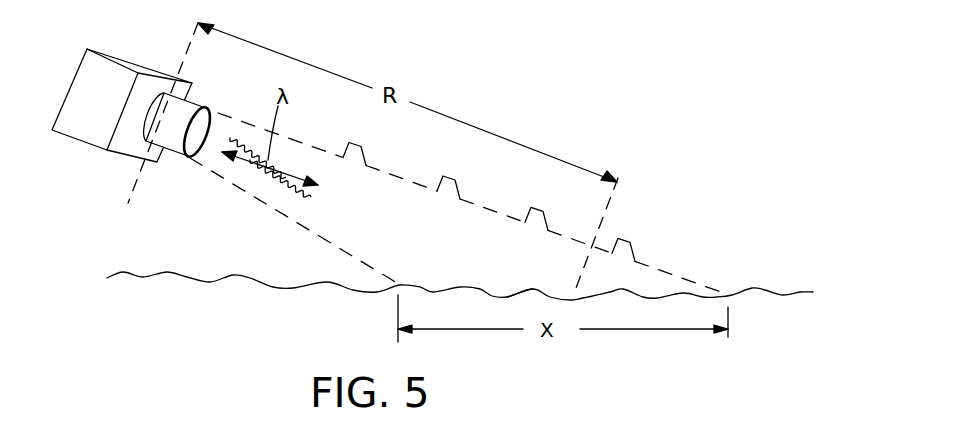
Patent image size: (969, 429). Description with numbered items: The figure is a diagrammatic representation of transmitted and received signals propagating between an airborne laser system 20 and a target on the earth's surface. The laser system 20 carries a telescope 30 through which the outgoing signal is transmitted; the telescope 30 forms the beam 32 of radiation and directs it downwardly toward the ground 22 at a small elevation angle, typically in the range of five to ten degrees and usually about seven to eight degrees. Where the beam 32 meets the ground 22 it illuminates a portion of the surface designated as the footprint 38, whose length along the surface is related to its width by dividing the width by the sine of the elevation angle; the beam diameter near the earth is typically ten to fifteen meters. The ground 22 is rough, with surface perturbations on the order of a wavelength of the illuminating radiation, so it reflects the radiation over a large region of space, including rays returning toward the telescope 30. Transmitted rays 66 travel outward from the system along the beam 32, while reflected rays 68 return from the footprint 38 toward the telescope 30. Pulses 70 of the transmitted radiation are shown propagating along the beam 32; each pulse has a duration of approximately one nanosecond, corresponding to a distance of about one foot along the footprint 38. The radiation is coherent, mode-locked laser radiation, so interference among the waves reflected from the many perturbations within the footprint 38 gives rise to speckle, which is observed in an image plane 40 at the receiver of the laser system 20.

The laser system 20 is at (85, 145).
The ground 22 is at (765, 288).
The telescope 30 is at (203, 104).
The beam 32 is at (400, 173).
The footprint 38 is at (520, 292).
The image plane 40 is at (128, 203).
The transmitted rays 66 is at (272, 160).
The reflected rays 68 is at (265, 160).
The pulses 70 is at (528, 218).